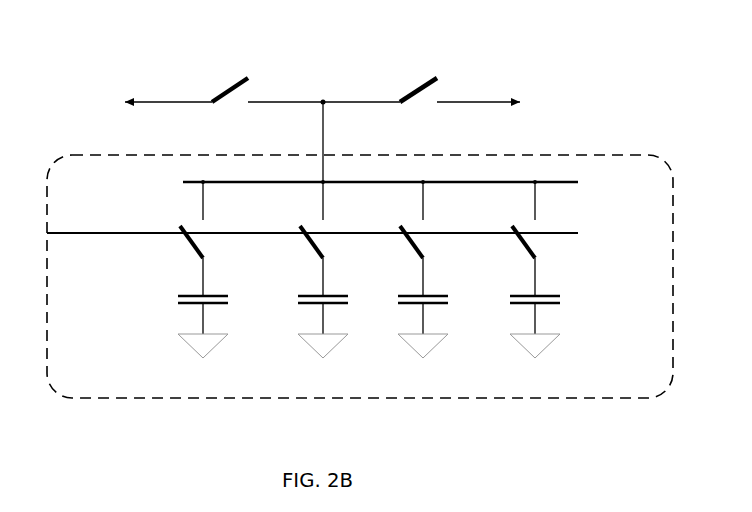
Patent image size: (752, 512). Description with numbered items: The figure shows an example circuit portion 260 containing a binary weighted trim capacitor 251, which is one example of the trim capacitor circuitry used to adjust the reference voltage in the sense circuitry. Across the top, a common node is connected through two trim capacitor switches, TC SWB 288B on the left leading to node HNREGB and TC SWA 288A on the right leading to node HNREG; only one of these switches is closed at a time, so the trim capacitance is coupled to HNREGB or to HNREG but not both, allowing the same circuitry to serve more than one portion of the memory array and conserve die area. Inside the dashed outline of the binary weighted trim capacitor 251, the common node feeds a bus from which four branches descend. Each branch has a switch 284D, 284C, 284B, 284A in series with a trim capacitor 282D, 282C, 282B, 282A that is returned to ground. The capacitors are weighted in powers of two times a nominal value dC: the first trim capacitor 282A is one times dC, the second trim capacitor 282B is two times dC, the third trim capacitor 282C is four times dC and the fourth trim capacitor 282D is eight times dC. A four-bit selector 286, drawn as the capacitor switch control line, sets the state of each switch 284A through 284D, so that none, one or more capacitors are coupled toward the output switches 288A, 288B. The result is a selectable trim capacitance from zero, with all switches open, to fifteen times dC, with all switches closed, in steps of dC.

The circuit portion 260 is at (68, 53).
The trim capacitor switch TC SWB 288B is at (262, 83).
The trim capacitor switch TC SWA 288A is at (459, 83).
The binary weighted trim capacitor 251 is at (675, 198).
The selector 286 is at (94, 237).
The switch 284D is at (209, 226).
The switch 284C is at (329, 226).
The switch 284B is at (432, 226).
The switch 284A is at (542, 225).
The fourth trim capacitor 282D is at (234, 300).
The third trim capacitor 282C is at (377, 273).
The second trim capacitor 282B is at (480, 283).
The first trim capacitor 282A is at (592, 282).